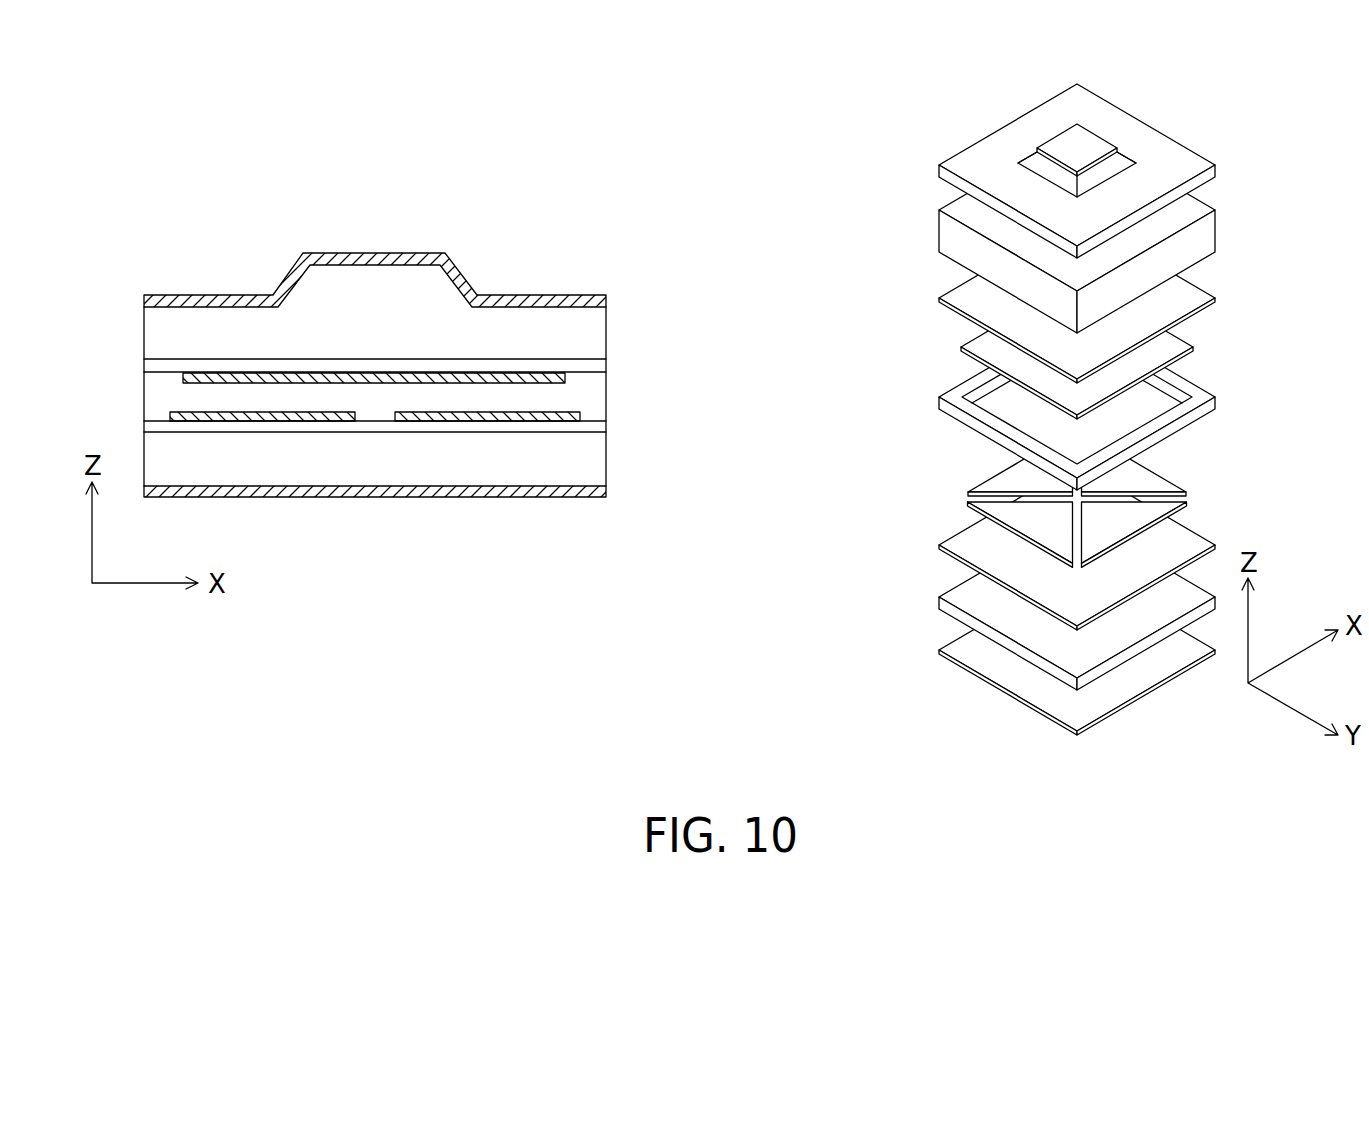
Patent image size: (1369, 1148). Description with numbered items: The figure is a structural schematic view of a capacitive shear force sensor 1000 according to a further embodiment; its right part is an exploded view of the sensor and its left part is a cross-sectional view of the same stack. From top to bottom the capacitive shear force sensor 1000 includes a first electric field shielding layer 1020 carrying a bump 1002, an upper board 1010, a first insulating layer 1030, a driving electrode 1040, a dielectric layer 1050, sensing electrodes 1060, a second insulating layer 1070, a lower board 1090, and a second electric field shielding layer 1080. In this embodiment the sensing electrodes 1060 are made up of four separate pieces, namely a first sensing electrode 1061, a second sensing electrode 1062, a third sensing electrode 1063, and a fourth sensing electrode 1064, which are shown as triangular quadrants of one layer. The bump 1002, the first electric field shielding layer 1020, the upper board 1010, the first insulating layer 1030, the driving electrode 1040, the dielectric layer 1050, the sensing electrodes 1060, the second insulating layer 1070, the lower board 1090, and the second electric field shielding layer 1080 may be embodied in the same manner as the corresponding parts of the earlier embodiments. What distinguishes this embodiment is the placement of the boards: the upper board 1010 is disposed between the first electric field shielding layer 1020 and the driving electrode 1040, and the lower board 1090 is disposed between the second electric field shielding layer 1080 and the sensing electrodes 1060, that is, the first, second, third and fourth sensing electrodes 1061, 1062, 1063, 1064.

The capacitive shear force sensor 1000 is at (398, 525).
The bump 1002 is at (1009, 160).
The upper board 1010 is at (923, 240).
The first electric field shielding layer 1020 is at (936, 170).
The first insulating layer 1030 is at (923, 305).
The driving electrode 1040 is at (945, 353).
The dielectric layer 1050 is at (923, 403).
The sensing electrodes 1060 is at (638, 408).
The first sensing electrode 1061 is at (1028, 520).
The second sensing electrode 1062 is at (1157, 470).
The third sensing electrode 1063 is at (1132, 515).
The fourth sensing electrode 1064 is at (1010, 478).
The second insulating layer 1070 is at (923, 550).
The second electric field shielding layer 1080 is at (606, 493).
The lower board 1090 is at (606, 460).